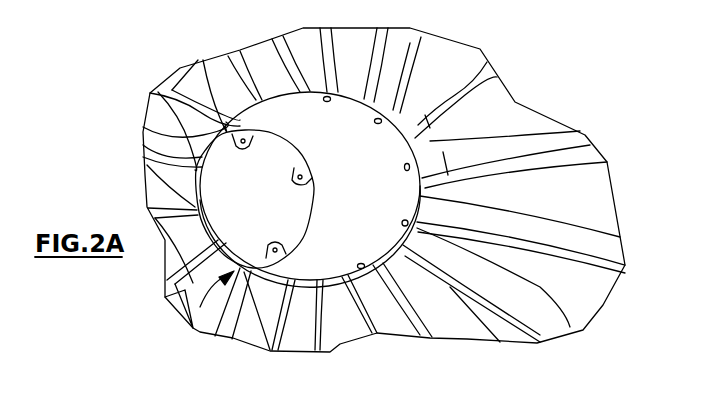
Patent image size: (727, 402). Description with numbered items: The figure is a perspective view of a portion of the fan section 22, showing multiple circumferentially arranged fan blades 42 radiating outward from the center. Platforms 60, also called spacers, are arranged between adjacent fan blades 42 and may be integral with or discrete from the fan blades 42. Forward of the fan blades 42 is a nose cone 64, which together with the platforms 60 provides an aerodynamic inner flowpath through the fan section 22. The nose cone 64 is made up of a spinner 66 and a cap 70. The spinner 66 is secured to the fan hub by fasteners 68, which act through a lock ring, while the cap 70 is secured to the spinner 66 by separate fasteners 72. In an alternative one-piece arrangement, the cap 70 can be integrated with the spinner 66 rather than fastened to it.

The fan section 22 is at (398, 194).
The fan blades 42 is at (413, 42).
The platforms 60 is at (397, 152).
The nose cone 64 is at (193, 328).
The spinner 66 is at (320, 272).
The fasteners 68 is at (347, 263).
The cap 70 is at (283, 215).
The fasteners 72 is at (247, 134).